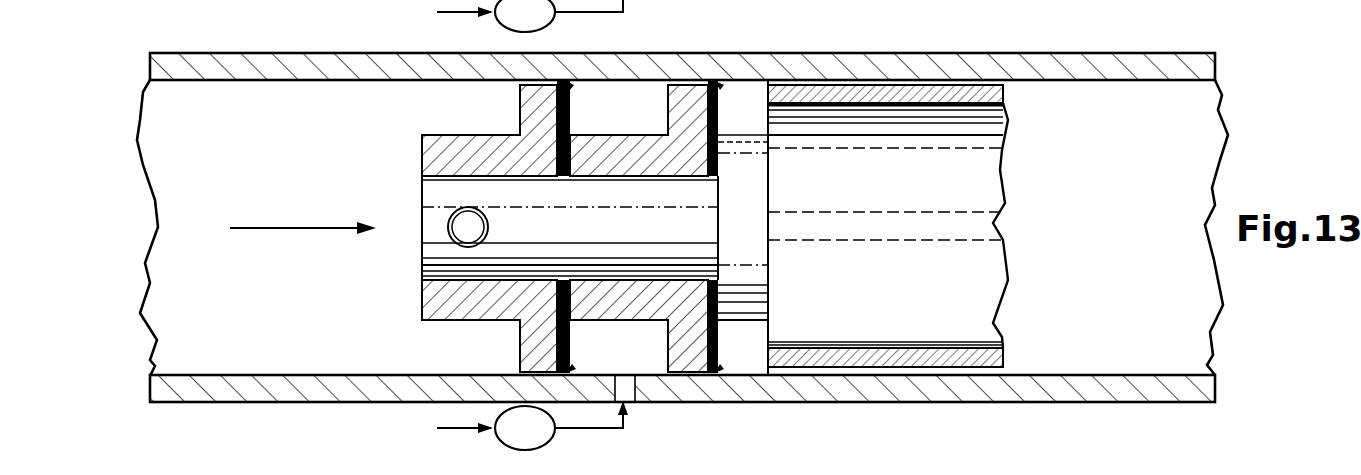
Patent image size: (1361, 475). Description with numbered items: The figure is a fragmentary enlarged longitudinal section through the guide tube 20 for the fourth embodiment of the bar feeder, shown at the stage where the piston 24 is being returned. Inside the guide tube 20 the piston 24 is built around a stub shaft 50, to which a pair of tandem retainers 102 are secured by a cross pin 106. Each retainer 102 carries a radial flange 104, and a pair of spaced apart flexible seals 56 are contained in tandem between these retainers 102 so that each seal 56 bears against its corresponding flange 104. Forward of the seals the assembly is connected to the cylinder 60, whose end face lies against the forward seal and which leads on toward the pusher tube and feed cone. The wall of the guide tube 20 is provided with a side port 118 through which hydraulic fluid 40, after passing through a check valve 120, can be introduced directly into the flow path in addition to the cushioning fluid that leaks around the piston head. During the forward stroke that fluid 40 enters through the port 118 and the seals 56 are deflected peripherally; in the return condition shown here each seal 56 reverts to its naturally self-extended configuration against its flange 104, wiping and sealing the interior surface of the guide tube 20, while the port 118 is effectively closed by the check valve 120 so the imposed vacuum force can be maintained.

The guide tube 20 is at (752, 55).
The piston 24 is at (436, 100).
The hydraulic fluid 40 is at (305, 226).
The stub shaft 50 is at (421, 258).
The flexible seal 56 is at (727, 423).
The cylinder 60 is at (905, 85).
The retainer 102 is at (425, 134).
The flange 104 is at (538, 86).
The cross pin 106 is at (449, 222).
The side port 118 is at (623, 373).
The check valve 120 is at (560, 23).